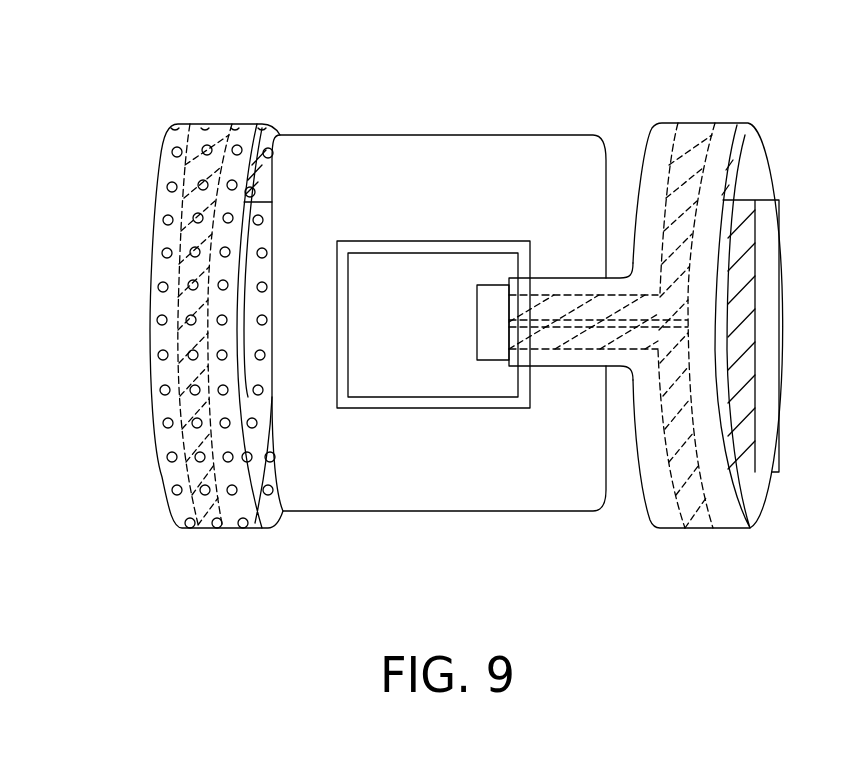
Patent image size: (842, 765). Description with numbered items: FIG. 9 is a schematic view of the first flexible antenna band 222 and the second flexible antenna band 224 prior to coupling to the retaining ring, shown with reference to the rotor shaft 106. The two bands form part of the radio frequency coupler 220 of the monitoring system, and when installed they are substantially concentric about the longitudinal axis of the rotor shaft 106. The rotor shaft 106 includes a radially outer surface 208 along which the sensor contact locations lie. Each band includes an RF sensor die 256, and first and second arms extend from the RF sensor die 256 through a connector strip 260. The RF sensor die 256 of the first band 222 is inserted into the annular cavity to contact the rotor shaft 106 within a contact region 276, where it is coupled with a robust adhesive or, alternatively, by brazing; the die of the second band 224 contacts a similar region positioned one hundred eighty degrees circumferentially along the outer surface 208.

The radio frequency (RF) coupler 220 is at (432, 118).
The second flexible antenna band 224 is at (212, 137).
The rotor shaft 106 is at (439, 283).
The radially outer surface 208 is at (362, 172).
The contact region 276 is at (433, 338).
The RF sensor die 256 is at (488, 338).
The connector strip 260 is at (588, 360).
The first flexible antenna band 222 is at (689, 130).